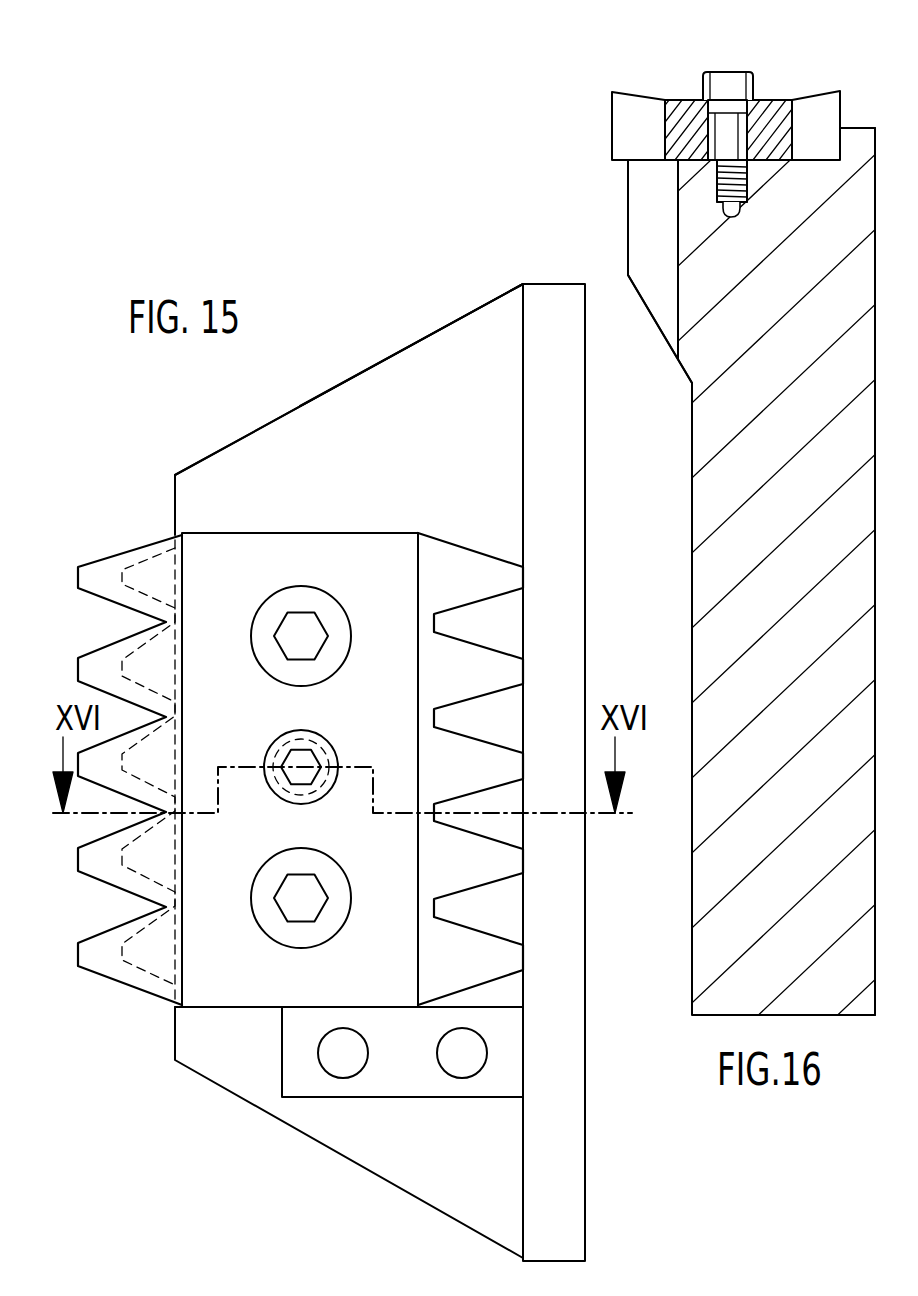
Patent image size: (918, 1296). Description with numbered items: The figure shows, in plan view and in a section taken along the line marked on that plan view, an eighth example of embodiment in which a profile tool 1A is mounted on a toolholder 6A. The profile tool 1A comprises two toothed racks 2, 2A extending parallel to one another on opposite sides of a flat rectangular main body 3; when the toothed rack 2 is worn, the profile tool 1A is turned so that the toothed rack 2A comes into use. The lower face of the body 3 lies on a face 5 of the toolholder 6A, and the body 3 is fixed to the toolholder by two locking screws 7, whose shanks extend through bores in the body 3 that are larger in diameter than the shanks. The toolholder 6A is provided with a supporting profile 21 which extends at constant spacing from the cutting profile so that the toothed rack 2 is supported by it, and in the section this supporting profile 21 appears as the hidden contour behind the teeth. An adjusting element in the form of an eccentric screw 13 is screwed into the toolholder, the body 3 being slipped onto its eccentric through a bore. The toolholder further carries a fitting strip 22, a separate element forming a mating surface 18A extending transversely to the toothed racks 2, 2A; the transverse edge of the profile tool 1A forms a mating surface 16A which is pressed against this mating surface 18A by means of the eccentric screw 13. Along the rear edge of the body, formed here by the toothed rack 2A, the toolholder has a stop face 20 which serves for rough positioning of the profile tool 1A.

In FIG. 15, the profile tool 1A is at (227, 530).
In FIG. 16, the profile tool 1A is at (776, 102).
In FIG. 15, the toothed rack 2 is at (128, 548).
In FIG. 16, the toothed rack 2 is at (643, 118).
In FIG. 15, the toothed rack 2A is at (478, 555).
In FIG. 15, the main body 3 is at (235, 978).
In FIG. 16, the main body 3 is at (686, 110).
In FIG. 15, the face 5 is at (350, 430).
In FIG. 15, the toolholder 6A is at (282, 415).
In FIG. 16, the toolholder 6A is at (725, 403).
In FIG. 15, the locking screw 7 is at (340, 620).
In FIG. 16, the locking screw 7 is at (725, 80).
In FIG. 15, the eccentric screw 13 is at (292, 777).
In FIG. 16, the eccentric screw 13 is at (718, 180).
In FIG. 15, the mating surface 16A is at (320, 1005).
In FIG. 15, the mating surface 18A is at (400, 1008).
In FIG. 15, the stop face 20 is at (523, 440).
In FIG. 16, the stop face 20 is at (845, 133).
In FIG. 15, the supporting profile 21 is at (135, 592).
In FIG. 16, the supporting profile 21 is at (655, 280).
In FIG. 15, the fitting strip 22 is at (427, 1080).